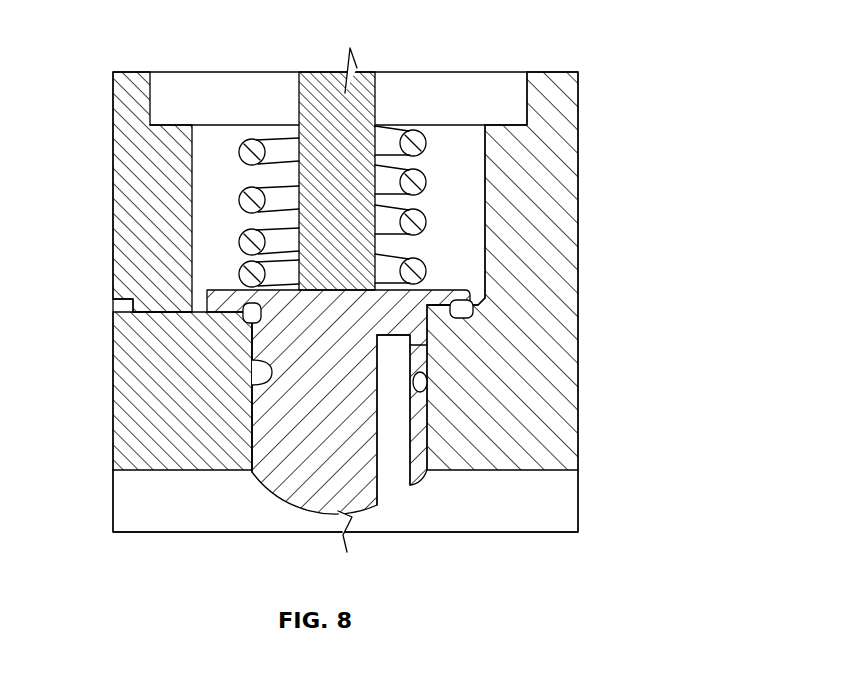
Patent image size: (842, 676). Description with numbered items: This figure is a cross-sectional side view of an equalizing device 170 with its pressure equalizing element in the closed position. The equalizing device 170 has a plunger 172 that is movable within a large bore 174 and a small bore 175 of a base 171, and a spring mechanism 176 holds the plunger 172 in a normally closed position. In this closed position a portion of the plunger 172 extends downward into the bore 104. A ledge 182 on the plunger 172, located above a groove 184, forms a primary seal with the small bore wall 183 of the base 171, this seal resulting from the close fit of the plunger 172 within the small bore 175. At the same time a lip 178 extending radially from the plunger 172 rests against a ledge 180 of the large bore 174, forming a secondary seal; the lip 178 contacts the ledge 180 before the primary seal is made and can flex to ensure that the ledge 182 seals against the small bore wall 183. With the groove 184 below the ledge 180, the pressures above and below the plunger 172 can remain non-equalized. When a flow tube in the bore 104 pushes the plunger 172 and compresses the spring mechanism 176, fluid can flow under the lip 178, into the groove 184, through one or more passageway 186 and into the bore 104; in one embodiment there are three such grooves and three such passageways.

The equalizing device 170 is at (611, 51).
The base 171 is at (552, 142).
The large bore 174 is at (462, 212).
The spring mechanism 176 is at (240, 200).
The lip 178 is at (474, 301).
The ledge 180 is at (490, 321).
The small bore 175 is at (428, 392).
The ledge 182 is at (113, 298).
The groove 184 is at (254, 366).
The small bore wall 183 is at (250, 399).
The plunger 172 is at (252, 403).
The bore 104 is at (247, 513).
The passageway 186 is at (392, 492).